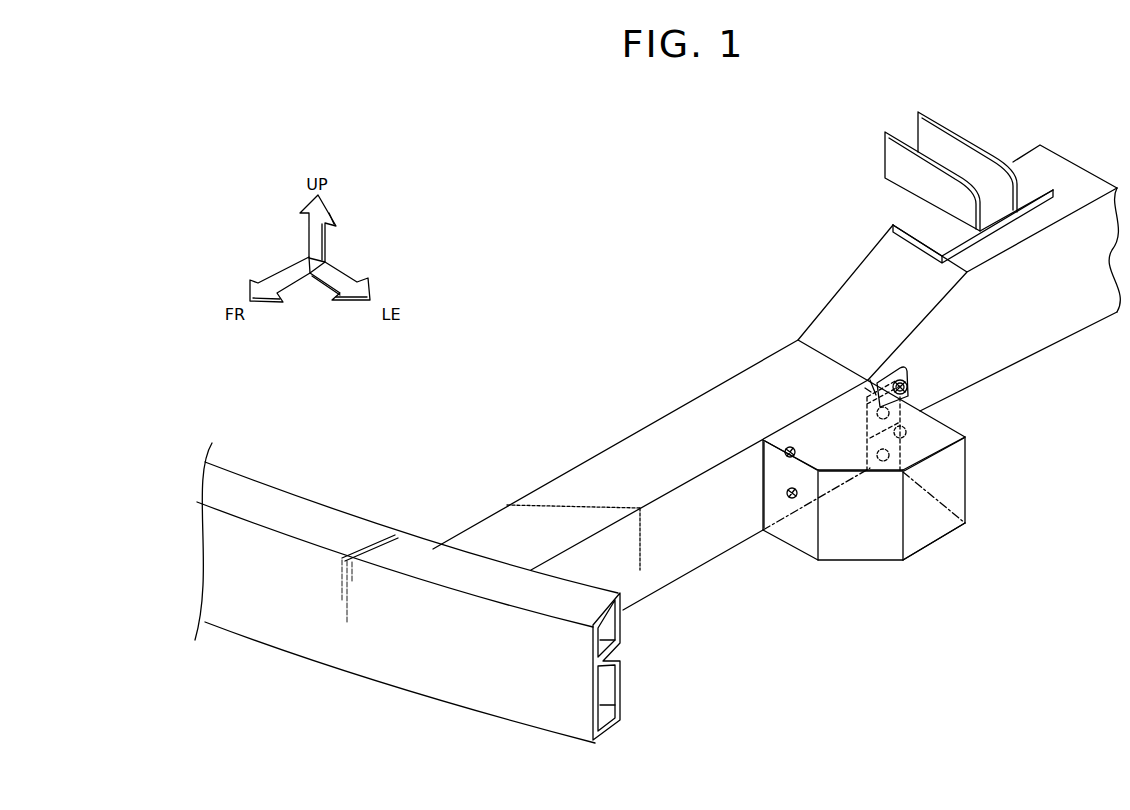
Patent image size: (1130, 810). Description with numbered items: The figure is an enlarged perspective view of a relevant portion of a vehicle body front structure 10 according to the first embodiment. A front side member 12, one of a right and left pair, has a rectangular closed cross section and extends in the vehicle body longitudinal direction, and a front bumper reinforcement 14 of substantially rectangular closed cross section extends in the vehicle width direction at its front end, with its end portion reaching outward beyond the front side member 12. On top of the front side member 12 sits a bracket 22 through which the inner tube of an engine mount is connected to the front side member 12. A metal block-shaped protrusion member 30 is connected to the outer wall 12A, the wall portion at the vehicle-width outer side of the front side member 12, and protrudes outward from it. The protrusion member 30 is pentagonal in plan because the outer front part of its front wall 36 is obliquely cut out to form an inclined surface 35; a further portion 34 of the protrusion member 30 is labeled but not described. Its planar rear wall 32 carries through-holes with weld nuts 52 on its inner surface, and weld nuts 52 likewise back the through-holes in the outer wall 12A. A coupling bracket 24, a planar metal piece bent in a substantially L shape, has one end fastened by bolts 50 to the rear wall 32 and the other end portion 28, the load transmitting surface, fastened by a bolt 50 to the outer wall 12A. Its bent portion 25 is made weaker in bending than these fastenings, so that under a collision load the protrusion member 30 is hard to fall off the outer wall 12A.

The vehicle body frame structure 10 is at (899, 595).
The front side member 12 is at (776, 372).
The outer wall 12A is at (679, 550).
The front bumper reinforcement 14 is at (442, 674).
The bracket 22 is at (920, 216).
The coupling bracket 24 is at (889, 372).
The bent portion 25 is at (870, 386).
The other end portion (load transmitting surface) 28 is at (907, 373).
The protrusion member 30 is at (879, 482).
The rear wall 32 is at (940, 473).
The front wall of bracket 34 is at (763, 483).
The inclined surface 35 is at (843, 535).
The front wall 36 is at (793, 530).
The bolts 50 is at (789, 447).
The weld nuts 52 is at (866, 398).